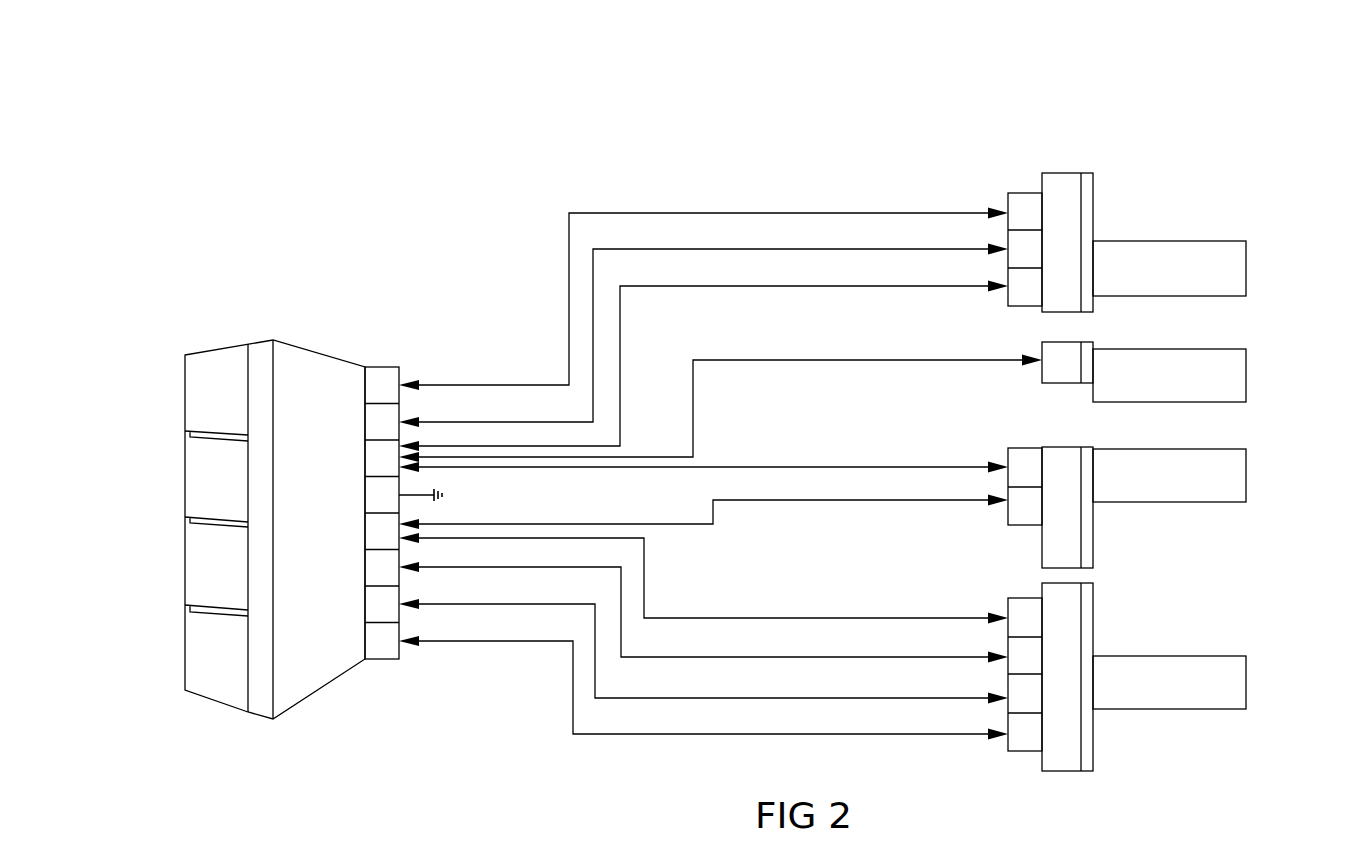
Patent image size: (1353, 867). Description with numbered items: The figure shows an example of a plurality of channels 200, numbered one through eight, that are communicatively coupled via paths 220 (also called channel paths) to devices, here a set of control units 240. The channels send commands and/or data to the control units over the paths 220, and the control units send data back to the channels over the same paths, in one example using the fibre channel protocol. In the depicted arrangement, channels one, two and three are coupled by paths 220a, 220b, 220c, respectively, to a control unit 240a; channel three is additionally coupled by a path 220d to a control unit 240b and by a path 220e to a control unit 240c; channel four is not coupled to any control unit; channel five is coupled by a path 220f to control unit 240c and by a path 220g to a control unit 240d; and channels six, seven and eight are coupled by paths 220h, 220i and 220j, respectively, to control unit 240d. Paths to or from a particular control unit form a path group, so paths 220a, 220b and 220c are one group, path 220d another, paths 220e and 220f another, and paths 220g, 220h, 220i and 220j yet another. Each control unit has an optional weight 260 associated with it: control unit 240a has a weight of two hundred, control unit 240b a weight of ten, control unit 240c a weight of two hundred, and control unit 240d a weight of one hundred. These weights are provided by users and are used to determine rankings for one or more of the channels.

The channels 200 is at (397, 318).
The paths 220 is at (548, 271).
The path 220a is at (753, 213).
The path 220b is at (753, 249).
The path 220c is at (753, 286).
The path 220d is at (753, 360).
The path 220e is at (762, 467).
The path 220f is at (762, 500).
The path 220g is at (753, 618).
The path 220h is at (753, 657).
The path 220i is at (753, 698).
The path 220j is at (753, 734).
The control units 240 is at (1067, 101).
The control unit 240a is at (1095, 205).
The control unit 240b is at (1088, 342).
The control unit 240c is at (1095, 543).
The control unit 240d is at (1095, 613).
The weight 260 is at (1250, 268).